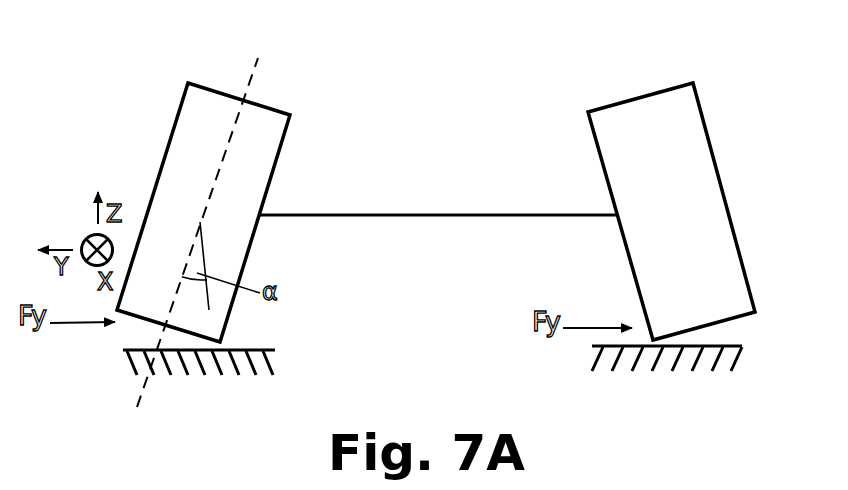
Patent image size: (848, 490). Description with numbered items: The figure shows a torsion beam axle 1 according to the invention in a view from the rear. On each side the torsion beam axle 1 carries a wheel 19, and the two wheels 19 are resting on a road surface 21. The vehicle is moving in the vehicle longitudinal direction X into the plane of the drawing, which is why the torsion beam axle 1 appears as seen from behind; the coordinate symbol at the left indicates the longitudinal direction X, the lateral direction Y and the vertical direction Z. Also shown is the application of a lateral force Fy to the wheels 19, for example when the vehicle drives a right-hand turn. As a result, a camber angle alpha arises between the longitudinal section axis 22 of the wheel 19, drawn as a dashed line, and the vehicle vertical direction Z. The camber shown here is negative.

The torsion beam axle 1 is at (425, 208).
The wheel 19 is at (182, 168).
The road surface 21 is at (732, 340).
The longitudinal section axis 22 is at (238, 114).